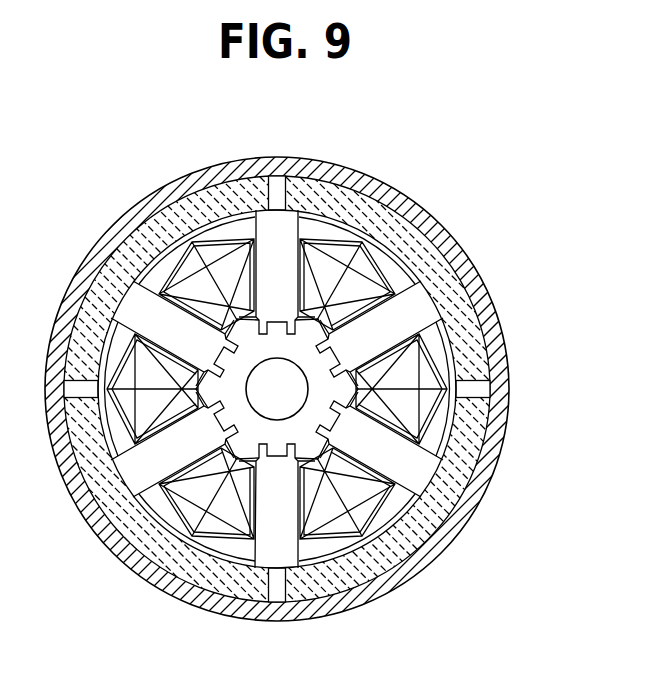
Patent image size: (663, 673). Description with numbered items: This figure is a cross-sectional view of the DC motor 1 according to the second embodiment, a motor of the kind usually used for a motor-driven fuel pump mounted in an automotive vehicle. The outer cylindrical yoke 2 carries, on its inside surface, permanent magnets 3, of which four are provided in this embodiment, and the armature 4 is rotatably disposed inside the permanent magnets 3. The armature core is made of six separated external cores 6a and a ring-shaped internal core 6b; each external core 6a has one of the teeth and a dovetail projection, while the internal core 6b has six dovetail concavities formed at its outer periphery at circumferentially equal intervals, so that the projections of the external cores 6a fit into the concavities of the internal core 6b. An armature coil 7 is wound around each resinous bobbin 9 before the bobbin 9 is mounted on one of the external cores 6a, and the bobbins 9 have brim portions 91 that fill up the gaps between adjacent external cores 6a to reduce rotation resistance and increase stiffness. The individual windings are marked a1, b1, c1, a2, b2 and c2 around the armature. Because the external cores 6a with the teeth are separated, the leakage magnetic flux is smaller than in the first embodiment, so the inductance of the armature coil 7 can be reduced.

The DC motor 1 is at (452, 197).
The yoke 2 is at (190, 180).
The permanent magnets 3 is at (147, 543).
The armature 4 is at (448, 318).
The external core 6a is at (445, 333).
The internal core 6b is at (286, 220).
The armature coil 7 is at (368, 282).
The bobbin 9 is at (362, 233).
The brim portion 91 is at (277, 389).
The pole a1 is at (174, 333).
The pole b1 is at (277, 272).
The pole c1 is at (379, 333).
The pole a2 is at (379, 444).
The pole b2 is at (277, 506).
The pole c2 is at (174, 444).